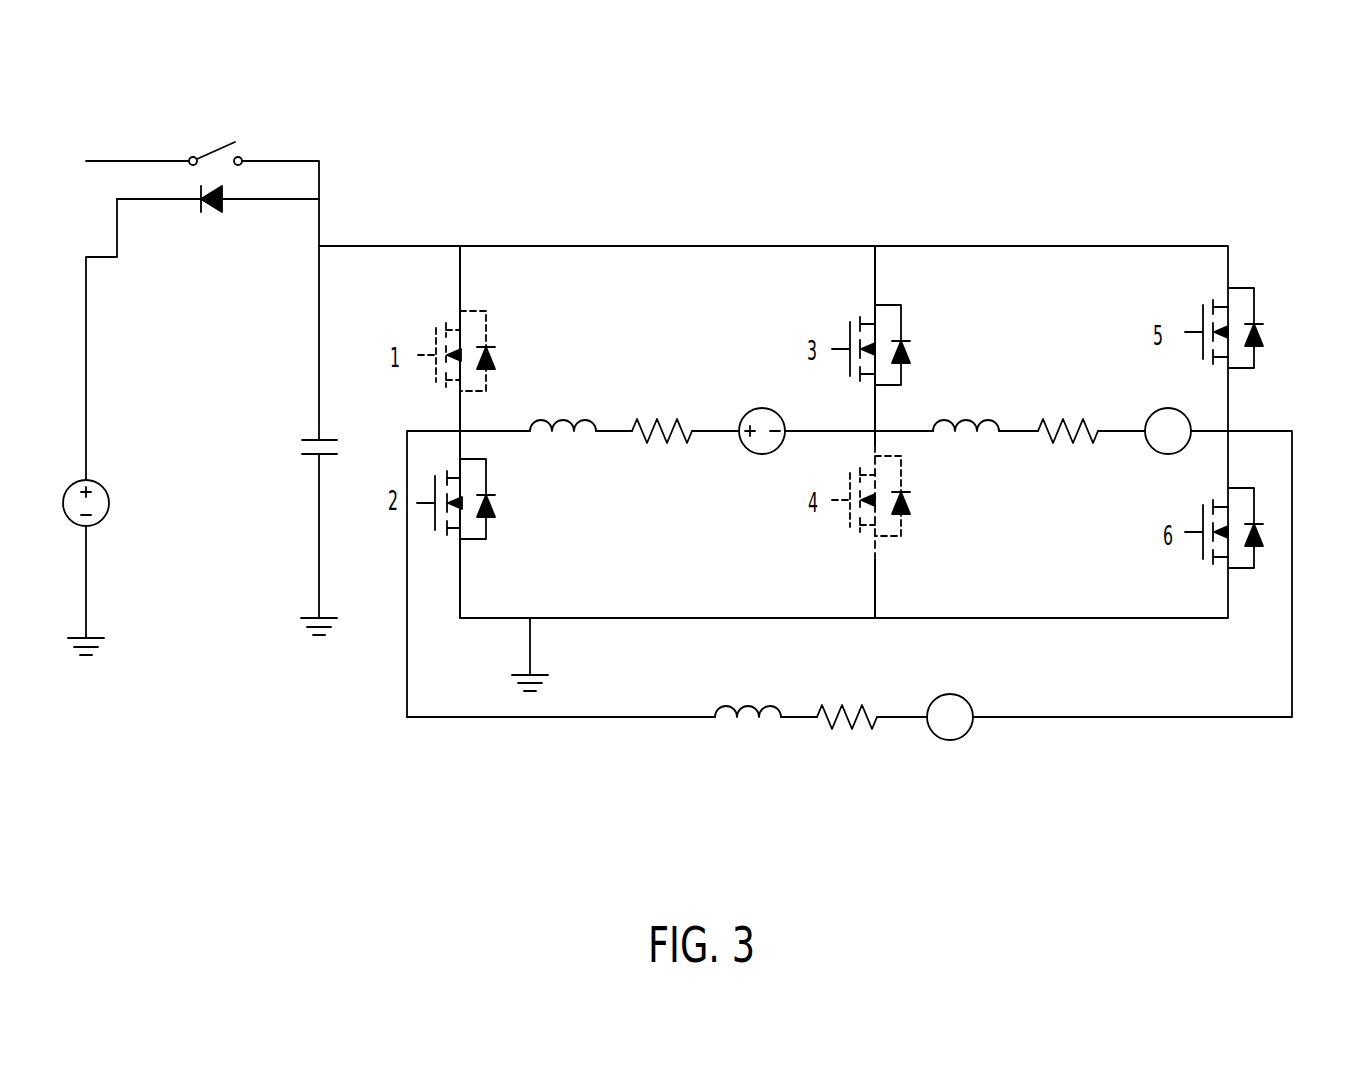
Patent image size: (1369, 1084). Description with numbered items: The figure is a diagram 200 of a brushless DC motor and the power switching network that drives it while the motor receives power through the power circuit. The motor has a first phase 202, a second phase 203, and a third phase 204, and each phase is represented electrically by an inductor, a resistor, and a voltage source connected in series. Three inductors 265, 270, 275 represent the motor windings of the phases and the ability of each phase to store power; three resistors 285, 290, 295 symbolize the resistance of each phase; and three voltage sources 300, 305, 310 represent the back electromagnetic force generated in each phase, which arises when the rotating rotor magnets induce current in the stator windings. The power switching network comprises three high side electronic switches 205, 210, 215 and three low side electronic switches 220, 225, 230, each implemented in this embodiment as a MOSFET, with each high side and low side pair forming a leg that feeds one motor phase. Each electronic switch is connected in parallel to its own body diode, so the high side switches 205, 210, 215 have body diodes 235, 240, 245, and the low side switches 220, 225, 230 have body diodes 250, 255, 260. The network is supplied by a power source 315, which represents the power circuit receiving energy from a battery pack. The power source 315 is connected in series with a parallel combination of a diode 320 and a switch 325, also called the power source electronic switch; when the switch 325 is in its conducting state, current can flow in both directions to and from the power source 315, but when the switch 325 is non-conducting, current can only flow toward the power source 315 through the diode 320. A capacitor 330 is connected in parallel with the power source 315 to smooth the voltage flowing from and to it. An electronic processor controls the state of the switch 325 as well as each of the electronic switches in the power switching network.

The diagram 200 is at (972, 83).
The first phase 202 is at (596, 432).
The second phase 203 is at (988, 432).
The third phase 204 is at (632, 796).
The high side electronic switch 205 is at (417, 341).
The high side electronic switch 210 is at (843, 329).
The high side electronic switch 215 is at (1196, 313).
The low side electronic switch 220 is at (827, 493).
The low side electronic switch 225 is at (1197, 512).
The low side electronic switch 230 is at (412, 485).
The body diode 235 is at (511, 349).
The body diode 240 is at (925, 345).
The body diode 245 is at (1277, 328).
The body diode 250 is at (925, 496).
The body diode 255 is at (1285, 528).
The body diode 260 is at (511, 499).
The inductor 265 is at (563, 391).
The inductor 270 is at (966, 392).
The inductor 275 is at (748, 675).
The resistor 285 is at (662, 400).
The resistor 290 is at (1068, 401).
The resistor 295 is at (847, 688).
The voltage source 300 is at (767, 395).
The voltage source 305 is at (1217, 414).
The voltage source 310 is at (954, 680).
The power source 315 is at (121, 498).
The diode 320 is at (218, 231).
The switch 325 is at (239, 126).
The capacitor 330 is at (308, 492).